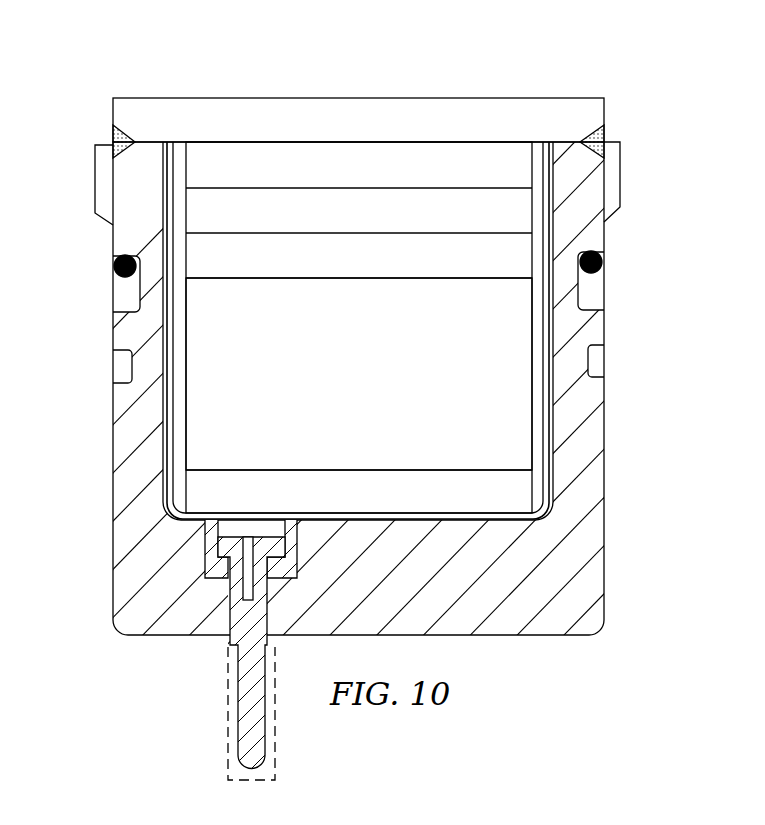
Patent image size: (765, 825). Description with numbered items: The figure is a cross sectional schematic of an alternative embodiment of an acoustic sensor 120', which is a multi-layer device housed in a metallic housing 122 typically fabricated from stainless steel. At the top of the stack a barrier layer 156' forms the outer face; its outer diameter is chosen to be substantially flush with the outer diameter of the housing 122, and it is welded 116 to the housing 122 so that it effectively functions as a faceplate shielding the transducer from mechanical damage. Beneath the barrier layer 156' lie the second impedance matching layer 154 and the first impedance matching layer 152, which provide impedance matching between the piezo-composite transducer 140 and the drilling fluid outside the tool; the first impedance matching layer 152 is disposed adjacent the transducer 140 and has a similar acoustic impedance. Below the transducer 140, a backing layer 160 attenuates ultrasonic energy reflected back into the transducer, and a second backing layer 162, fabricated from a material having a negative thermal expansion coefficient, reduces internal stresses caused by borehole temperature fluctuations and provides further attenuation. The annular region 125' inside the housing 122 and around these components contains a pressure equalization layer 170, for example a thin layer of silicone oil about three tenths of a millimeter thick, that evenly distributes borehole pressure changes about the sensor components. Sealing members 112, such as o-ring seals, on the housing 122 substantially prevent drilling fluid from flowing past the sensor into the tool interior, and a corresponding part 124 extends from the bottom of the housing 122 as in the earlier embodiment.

The acoustic sensor 120' is at (357, 400).
The weld 116 is at (119, 132).
The barrier layer 156' is at (358, 120).
The second impedance matching layer 154 is at (379, 177).
The first impedance matching layer 152 is at (379, 222).
The piezo-composite transducer 140 is at (379, 266).
The backing layer 160 is at (379, 387).
The second backing layer 162 is at (379, 507).
The pressure equalization layer 170 is at (168, 395).
The annular region 125' is at (356, 327).
The sealing member 112 is at (114, 265).
The housing 122 is at (113, 494).
The corresponding part 124 is at (238, 725).